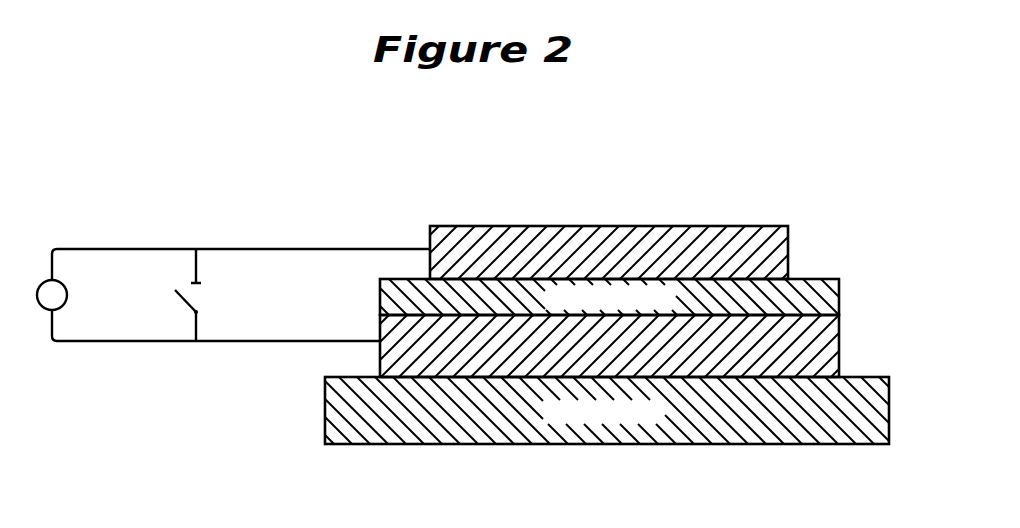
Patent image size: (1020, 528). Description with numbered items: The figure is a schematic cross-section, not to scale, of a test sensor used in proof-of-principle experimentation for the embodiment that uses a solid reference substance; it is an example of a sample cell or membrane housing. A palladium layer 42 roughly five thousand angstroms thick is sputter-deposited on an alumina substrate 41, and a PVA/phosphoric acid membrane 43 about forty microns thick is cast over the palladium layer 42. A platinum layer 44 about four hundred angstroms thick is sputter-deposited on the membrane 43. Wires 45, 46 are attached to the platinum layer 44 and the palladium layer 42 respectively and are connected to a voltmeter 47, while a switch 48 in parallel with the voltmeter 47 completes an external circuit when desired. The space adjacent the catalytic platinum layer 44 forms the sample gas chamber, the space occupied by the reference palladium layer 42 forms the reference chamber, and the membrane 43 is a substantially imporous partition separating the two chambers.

The substrate 41 is at (683, 447).
The palladium layer 42 is at (840, 357).
The membrane 43 is at (840, 297).
The platinum layer 44 is at (645, 226).
The wire 45 is at (142, 249).
The wire 46 is at (137, 343).
The voltmeter 47 is at (68, 287).
The switch 48 is at (186, 301).